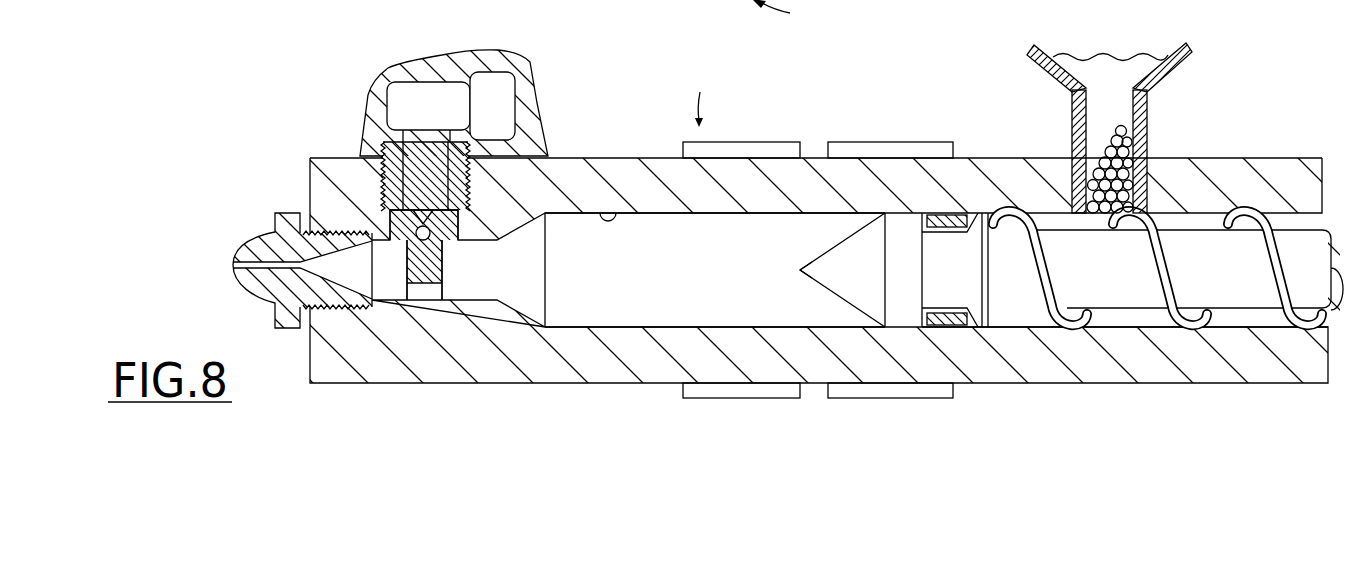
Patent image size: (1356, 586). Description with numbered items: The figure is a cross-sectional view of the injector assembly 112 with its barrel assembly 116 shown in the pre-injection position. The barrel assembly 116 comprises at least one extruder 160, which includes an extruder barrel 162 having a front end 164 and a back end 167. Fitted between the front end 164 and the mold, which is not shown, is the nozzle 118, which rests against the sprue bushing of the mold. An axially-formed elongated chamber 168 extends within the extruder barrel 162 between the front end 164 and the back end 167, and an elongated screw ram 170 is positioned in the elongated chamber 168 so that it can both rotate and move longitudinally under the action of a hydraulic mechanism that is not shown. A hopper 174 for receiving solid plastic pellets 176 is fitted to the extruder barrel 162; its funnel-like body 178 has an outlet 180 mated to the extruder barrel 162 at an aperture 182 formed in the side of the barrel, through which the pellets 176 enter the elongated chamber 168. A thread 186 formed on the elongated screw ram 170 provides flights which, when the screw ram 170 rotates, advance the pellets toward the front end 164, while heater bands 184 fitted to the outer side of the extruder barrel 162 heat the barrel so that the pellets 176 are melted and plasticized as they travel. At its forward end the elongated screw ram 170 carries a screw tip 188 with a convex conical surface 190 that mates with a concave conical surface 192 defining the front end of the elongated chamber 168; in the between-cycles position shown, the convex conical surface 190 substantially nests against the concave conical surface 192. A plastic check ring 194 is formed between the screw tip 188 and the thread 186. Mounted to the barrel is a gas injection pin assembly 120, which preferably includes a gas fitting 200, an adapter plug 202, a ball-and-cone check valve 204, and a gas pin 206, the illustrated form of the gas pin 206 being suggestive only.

The injector assembly 112 is at (795, 13).
The barrel assembly 116 is at (704, 94).
The nozzle 118 is at (277, 223).
The gas injection pin assembly 120 is at (510, 88).
The extruder 160 is at (586, 395).
The extruder barrel 162 is at (883, 165).
The front end 164 is at (558, 163).
The back end 167 is at (1262, 372).
The elongated chamber 168 is at (612, 218).
The elongated screw ram 170 is at (1027, 300).
The hopper 174 is at (1177, 68).
The solid plastic pellets 176 is at (1117, 60).
The funnel-like body 178 is at (1028, 57).
The outlet 180 is at (1120, 183).
The aperture 182 is at (1095, 160).
The heater bands 184 is at (803, 393).
The thread 186 is at (1180, 300).
The screw tip 188 is at (838, 243).
The convex conical surface 190 is at (803, 270).
The concave conical surface 192 is at (540, 293).
The plastic check ring 194 is at (945, 320).
The gas fitting 200 is at (492, 78).
The adapter plug 202 is at (382, 177).
The check valve 204 is at (392, 214).
The gas pin 206 is at (422, 267).